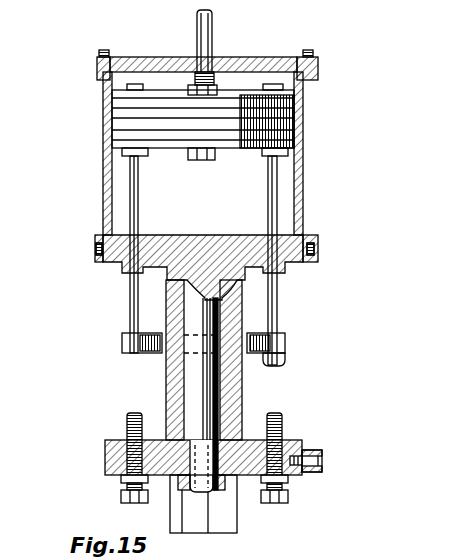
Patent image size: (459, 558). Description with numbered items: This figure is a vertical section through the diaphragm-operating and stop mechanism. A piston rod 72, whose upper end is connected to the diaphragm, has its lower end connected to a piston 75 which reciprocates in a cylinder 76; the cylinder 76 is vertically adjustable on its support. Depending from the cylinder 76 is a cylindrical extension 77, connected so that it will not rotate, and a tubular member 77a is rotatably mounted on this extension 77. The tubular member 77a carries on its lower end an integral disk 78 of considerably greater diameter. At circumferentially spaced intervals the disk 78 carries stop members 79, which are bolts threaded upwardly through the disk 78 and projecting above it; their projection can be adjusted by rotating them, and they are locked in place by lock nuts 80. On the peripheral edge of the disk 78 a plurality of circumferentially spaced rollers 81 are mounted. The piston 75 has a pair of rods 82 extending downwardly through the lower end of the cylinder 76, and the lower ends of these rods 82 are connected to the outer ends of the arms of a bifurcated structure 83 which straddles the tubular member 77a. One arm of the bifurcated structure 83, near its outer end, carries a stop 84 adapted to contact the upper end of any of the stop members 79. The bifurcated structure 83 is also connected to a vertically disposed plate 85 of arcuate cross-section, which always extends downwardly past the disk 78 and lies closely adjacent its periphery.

The piston rod 72 is at (200, 33).
The piston 75 is at (160, 118).
The cylinder 76 is at (112, 188).
The cylindrical extension 77 is at (200, 380).
The tubular member 77a is at (172, 400).
The disk 78 is at (105, 450).
The stop members 79 is at (127, 420).
The lock nuts 80 is at (120, 482).
The rollers 81 is at (308, 450).
The rods 82 is at (135, 290).
The bifurcated structure 83 is at (135, 343).
The stop 84 is at (272, 358).
The plate 85 is at (225, 508).